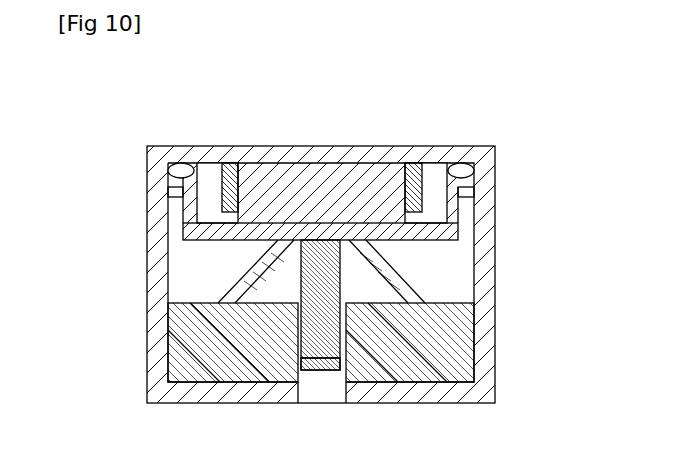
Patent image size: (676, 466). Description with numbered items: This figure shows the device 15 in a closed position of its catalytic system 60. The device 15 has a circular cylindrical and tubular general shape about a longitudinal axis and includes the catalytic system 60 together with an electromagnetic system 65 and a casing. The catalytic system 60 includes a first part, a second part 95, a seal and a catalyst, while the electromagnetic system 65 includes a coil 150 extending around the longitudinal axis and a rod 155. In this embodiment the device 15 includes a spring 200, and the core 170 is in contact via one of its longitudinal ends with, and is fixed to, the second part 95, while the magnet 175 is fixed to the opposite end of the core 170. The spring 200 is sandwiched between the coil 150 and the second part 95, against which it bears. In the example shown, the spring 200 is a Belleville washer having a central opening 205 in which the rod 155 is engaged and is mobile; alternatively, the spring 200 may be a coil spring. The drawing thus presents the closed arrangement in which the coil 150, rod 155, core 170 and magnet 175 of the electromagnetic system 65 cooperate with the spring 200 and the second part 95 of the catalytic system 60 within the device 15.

The device 15 is at (441, 120).
The catalytic system 60 is at (463, 188).
The second part 95 is at (183, 232).
The coil 150 is at (185, 340).
The rod 155 is at (343, 272).
The core 170 is at (300, 352).
The magnet 175 is at (323, 362).
The spring 200 is at (412, 296).
The central opening 205 is at (343, 254).
The electromagnetic system 65 is at (456, 345).